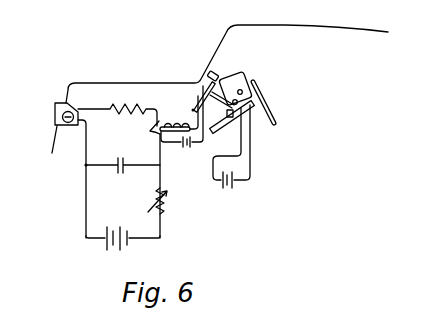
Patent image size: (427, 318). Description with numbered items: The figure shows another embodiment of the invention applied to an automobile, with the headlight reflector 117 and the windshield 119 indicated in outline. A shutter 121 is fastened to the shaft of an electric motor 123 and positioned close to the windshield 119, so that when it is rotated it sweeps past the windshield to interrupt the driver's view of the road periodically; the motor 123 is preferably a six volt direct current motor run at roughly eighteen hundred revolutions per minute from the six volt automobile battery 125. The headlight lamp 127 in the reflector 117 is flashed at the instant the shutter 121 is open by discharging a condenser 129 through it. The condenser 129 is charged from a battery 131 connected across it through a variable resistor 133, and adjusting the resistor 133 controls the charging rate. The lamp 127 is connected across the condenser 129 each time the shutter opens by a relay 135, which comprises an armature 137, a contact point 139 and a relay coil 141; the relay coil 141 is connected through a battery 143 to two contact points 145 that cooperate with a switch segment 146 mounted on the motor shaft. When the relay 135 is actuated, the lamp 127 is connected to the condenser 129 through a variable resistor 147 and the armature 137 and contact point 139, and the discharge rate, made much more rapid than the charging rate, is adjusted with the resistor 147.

The headlight reflector 117 is at (62, 102).
The windshield 119 is at (216, 50).
The shutter 121 is at (197, 97).
The electric motor 123 is at (227, 86).
The automobile battery 125 is at (236, 186).
The headlight lamp 127 is at (64, 118).
The condenser 129 is at (121, 176).
The battery 131 is at (133, 243).
The variable resistor 133 is at (165, 205).
The relay 135 is at (188, 120).
The armature 137 is at (155, 123).
The contact point 139 is at (149, 131).
The relay coil 141 is at (173, 132).
The battery 143 is at (187, 148).
The contact points 145 is at (220, 120).
The switch segment 146 is at (215, 80).
The variable resistor 147 is at (128, 107).